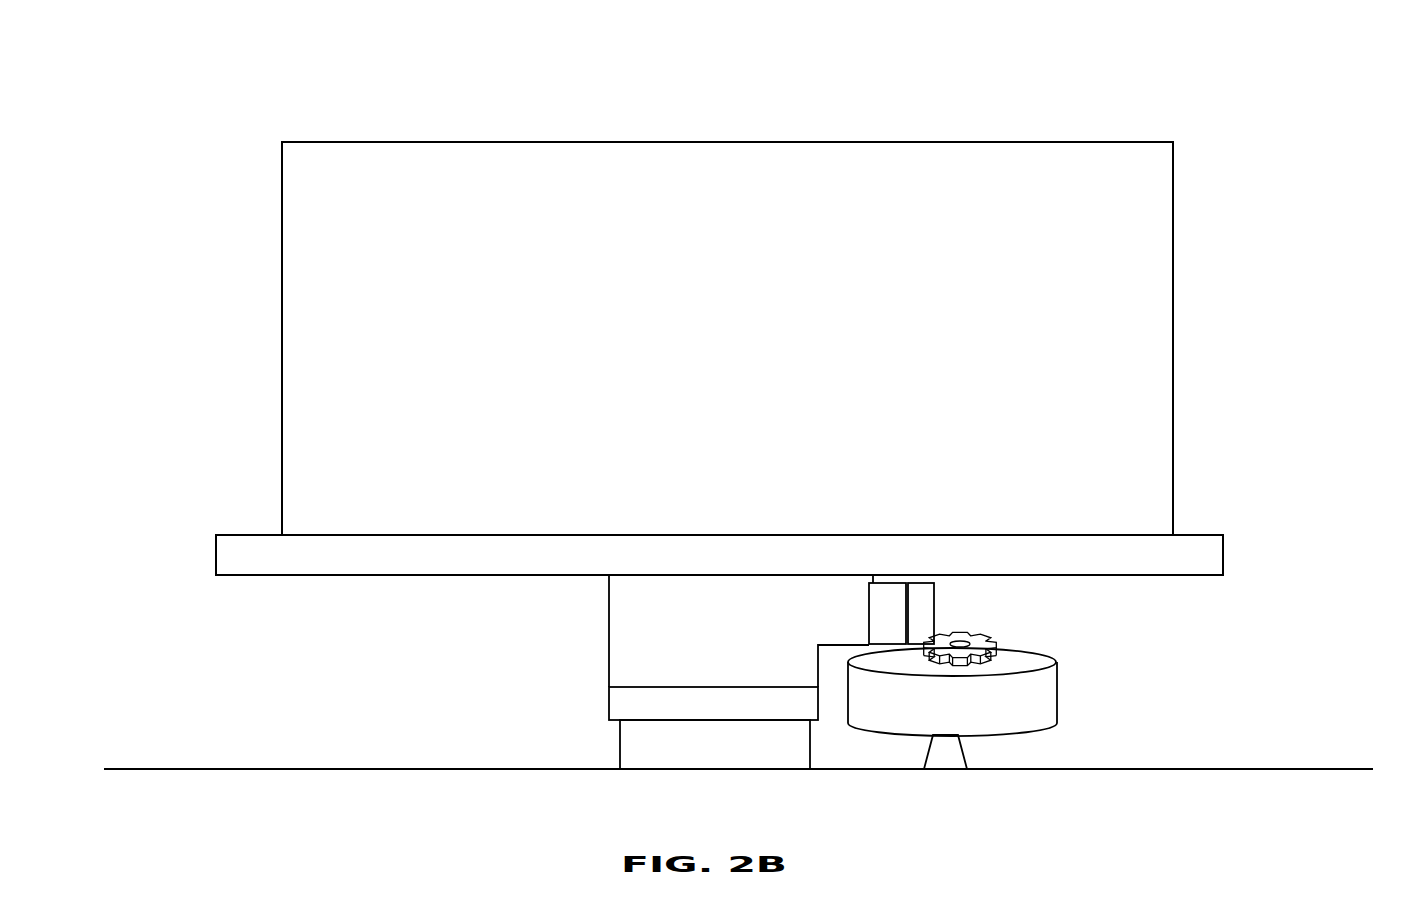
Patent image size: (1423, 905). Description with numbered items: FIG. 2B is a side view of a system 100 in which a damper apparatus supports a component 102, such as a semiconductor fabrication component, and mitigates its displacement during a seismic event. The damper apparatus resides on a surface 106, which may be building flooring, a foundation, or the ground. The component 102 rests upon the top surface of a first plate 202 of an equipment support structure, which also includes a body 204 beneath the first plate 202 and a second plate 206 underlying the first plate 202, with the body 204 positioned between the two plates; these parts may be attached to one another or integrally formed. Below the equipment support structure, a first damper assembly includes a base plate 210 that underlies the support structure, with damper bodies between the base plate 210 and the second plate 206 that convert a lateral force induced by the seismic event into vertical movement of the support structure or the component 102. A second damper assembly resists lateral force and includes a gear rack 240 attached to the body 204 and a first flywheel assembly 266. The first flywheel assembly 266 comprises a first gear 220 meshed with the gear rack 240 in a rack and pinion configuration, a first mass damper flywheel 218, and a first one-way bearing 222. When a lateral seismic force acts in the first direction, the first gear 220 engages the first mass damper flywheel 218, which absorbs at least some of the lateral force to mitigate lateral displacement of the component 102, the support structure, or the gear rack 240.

The system 100 is at (145, 81).
The component 102 is at (1168, 355).
The surface 106 is at (1305, 770).
The first plate 202 is at (241, 553).
The body 204 is at (622, 621).
The second plate 206 is at (618, 692).
The base plate 210 is at (643, 748).
The first mass damper flywheel 218 is at (1050, 708).
The first gear 220 is at (975, 642).
The first one-way bearing 222 is at (945, 760).
The gear rack 240 is at (926, 612).
The first flywheel assembly 266 is at (1083, 730).